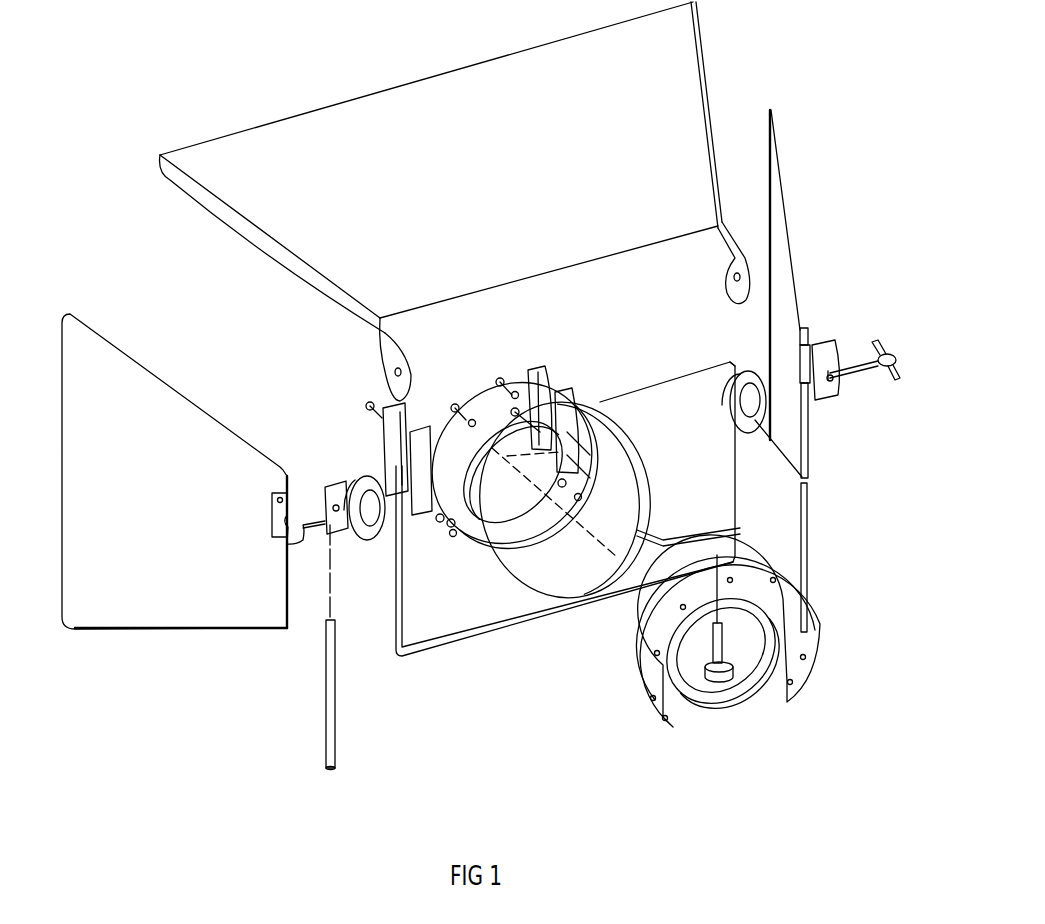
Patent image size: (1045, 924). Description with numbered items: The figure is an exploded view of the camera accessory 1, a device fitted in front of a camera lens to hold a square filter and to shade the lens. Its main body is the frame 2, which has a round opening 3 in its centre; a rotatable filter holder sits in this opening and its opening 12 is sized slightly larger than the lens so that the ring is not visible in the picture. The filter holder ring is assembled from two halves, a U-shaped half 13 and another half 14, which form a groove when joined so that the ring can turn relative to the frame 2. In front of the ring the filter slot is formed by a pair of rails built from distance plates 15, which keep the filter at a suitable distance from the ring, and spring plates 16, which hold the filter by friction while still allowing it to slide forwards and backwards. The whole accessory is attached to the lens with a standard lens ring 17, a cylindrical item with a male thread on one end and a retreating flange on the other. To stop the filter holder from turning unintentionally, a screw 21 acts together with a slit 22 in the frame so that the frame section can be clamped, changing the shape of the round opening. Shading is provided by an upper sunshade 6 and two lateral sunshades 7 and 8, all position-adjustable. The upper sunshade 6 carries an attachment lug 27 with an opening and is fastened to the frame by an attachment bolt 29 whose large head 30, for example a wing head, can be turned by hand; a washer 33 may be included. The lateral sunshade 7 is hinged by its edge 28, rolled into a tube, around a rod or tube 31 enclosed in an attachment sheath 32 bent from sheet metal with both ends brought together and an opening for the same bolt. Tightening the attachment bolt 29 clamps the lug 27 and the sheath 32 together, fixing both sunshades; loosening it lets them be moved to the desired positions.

The camera accessory 1 is at (256, 98).
The frame 2 is at (683, 527).
The round opening 3 is at (615, 453).
The upper sunshade 6 is at (631, 159).
The lateral sunshade 7 is at (178, 608).
The lateral sunshade 8 is at (790, 318).
The opening 12 is at (523, 500).
The U-shaped half 13 is at (800, 668).
The other half 14 is at (451, 528).
The distance plate 15 is at (417, 467).
The spring plate 16 is at (397, 412).
The lens ring 17 is at (718, 698).
The screw 21 is at (715, 675).
The slit 22 is at (663, 538).
The attachment lug 27 is at (388, 357).
The edge 28 is at (804, 426).
The attachment bolt 29 is at (850, 371).
The head 30 is at (883, 343).
The rod or tube 31 is at (329, 730).
The attachment sheath 32 is at (327, 495).
The washer 33 is at (363, 484).